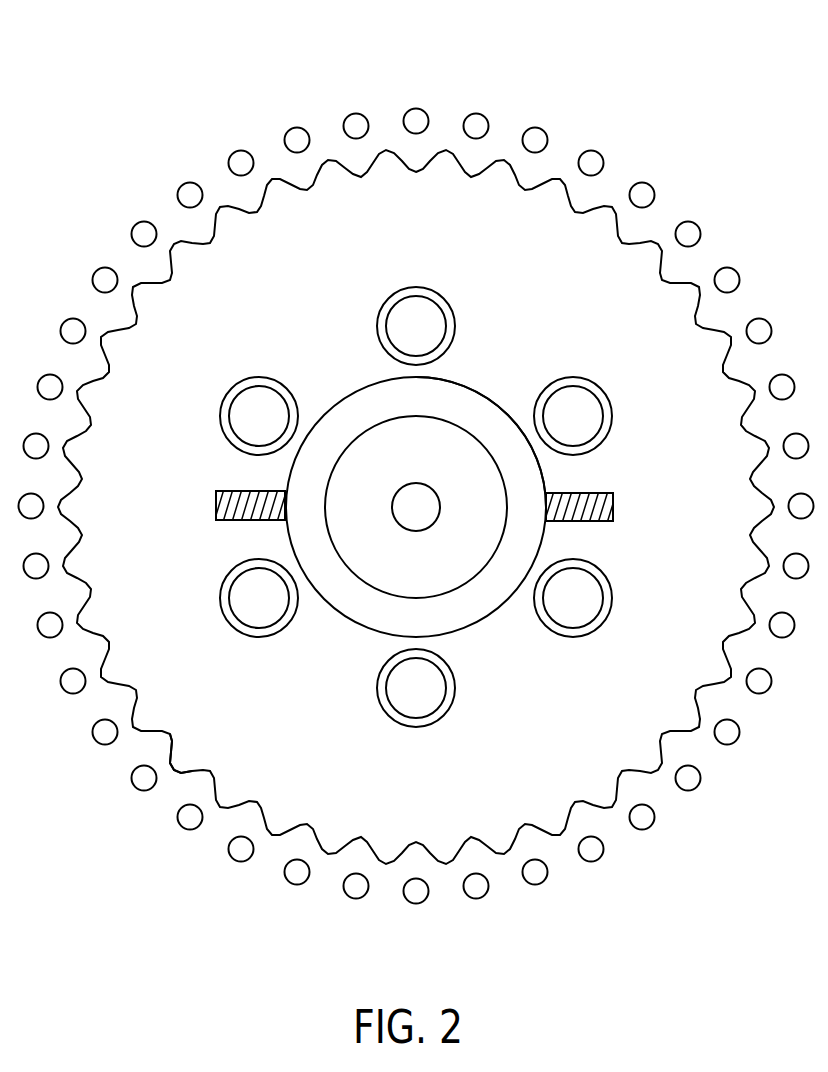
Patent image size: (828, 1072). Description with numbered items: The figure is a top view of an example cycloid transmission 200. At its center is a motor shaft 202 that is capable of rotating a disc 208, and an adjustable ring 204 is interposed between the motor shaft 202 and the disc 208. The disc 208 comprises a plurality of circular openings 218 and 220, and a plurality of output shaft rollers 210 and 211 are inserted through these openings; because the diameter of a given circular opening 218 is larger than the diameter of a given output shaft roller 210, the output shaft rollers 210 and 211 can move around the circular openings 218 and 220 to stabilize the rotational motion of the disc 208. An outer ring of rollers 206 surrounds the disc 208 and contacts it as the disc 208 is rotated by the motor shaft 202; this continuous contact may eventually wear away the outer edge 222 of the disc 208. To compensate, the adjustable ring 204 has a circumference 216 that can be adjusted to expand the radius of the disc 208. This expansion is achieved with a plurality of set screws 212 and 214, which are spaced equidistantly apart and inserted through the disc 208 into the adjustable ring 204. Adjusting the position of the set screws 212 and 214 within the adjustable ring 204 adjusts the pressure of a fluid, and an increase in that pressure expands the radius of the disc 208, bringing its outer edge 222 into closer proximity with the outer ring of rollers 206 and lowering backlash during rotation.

The cycloid transmission 200 is at (176, 96).
The motor shaft 202 is at (460, 470).
The adjustable ring 204 is at (478, 596).
The outer ring of rollers 206 is at (412, 122).
The disc 208 is at (605, 262).
The output shaft roller 210 is at (255, 415).
The output shaft roller 211 is at (416, 325).
The set screw 212 is at (240, 492).
The set screw 214 is at (585, 493).
The circumference 216 is at (347, 620).
The circular opening 218 is at (282, 392).
The circular opening 220 is at (440, 295).
The outer edge 222 is at (172, 775).